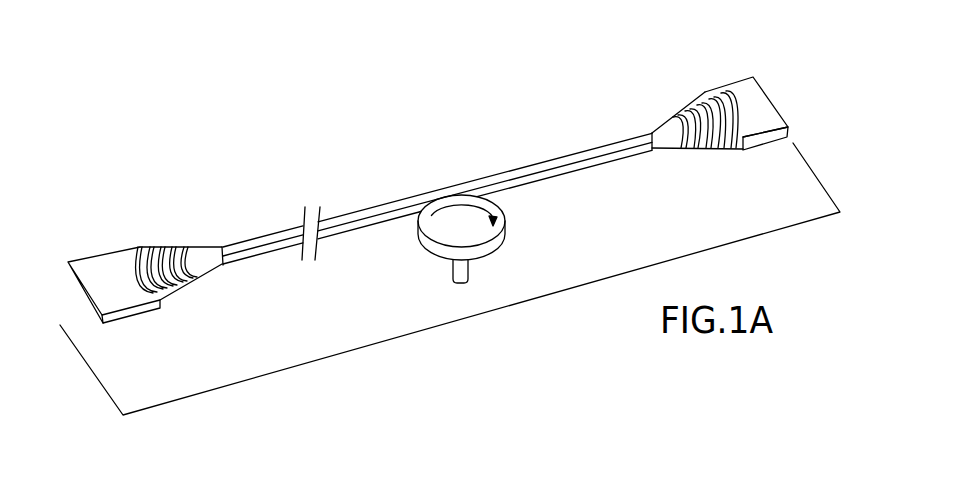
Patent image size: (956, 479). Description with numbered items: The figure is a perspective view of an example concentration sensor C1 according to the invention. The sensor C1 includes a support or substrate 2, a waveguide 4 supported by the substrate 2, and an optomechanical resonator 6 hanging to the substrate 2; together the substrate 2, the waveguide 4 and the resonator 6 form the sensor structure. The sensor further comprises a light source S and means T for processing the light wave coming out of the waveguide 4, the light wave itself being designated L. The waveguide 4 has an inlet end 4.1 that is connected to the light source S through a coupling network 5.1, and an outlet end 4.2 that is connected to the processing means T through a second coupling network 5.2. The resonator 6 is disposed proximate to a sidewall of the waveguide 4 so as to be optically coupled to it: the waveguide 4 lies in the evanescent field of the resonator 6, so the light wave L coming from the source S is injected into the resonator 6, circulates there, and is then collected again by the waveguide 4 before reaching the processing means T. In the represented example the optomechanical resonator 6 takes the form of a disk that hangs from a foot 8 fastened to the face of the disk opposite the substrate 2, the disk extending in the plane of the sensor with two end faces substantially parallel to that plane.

The substrate 2 is at (193, 395).
The light source S is at (68, 262).
The means for processing the light wave T is at (753, 77).
The waveguide 4 is at (449, 204).
The inlet end 4.1 is at (237, 262).
The outlet end 4.2 is at (638, 151).
The coupling network 5.1 is at (138, 300).
The coupling network 5.2 is at (693, 149).
The concentration sensor C1 is at (448, 170).
The optomechanical resonator 6 is at (494, 270).
The foot 8 is at (462, 284).
The light wave L is at (502, 205).